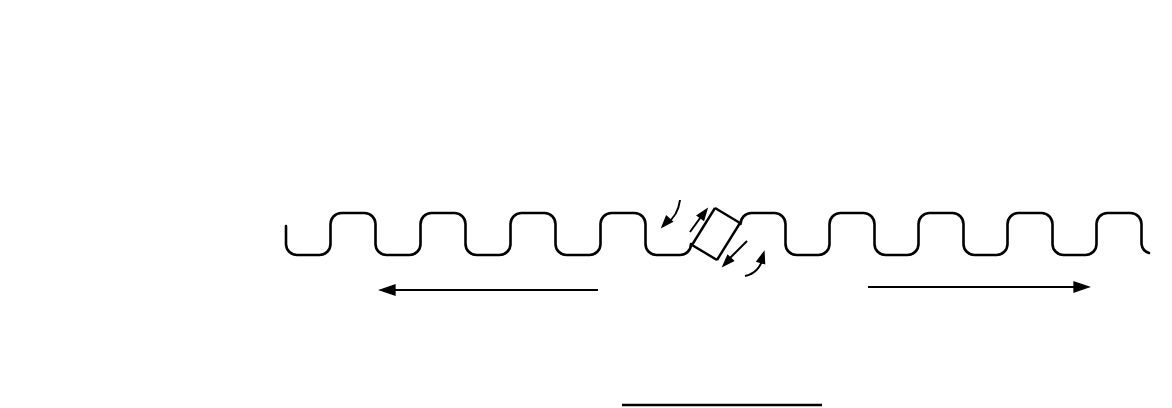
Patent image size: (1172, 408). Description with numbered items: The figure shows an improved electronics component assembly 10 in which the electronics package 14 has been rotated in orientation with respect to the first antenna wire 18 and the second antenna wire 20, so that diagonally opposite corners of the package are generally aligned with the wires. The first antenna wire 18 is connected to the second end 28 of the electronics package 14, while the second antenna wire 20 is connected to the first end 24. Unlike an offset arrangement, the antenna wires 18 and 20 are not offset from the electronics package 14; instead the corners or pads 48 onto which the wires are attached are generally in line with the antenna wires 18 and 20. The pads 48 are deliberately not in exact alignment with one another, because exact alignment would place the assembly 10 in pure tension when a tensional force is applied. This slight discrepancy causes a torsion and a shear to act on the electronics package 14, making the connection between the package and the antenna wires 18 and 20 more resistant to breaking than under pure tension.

The improved electronics component assembly 10 is at (598, 146).
The electronics package 14 is at (713, 207).
The first antenna wire 18 is at (446, 214).
The second antenna wire 20 is at (941, 213).
The first end 24 is at (722, 211).
The second end 28 is at (712, 262).
The pads 48 is at (740, 221).